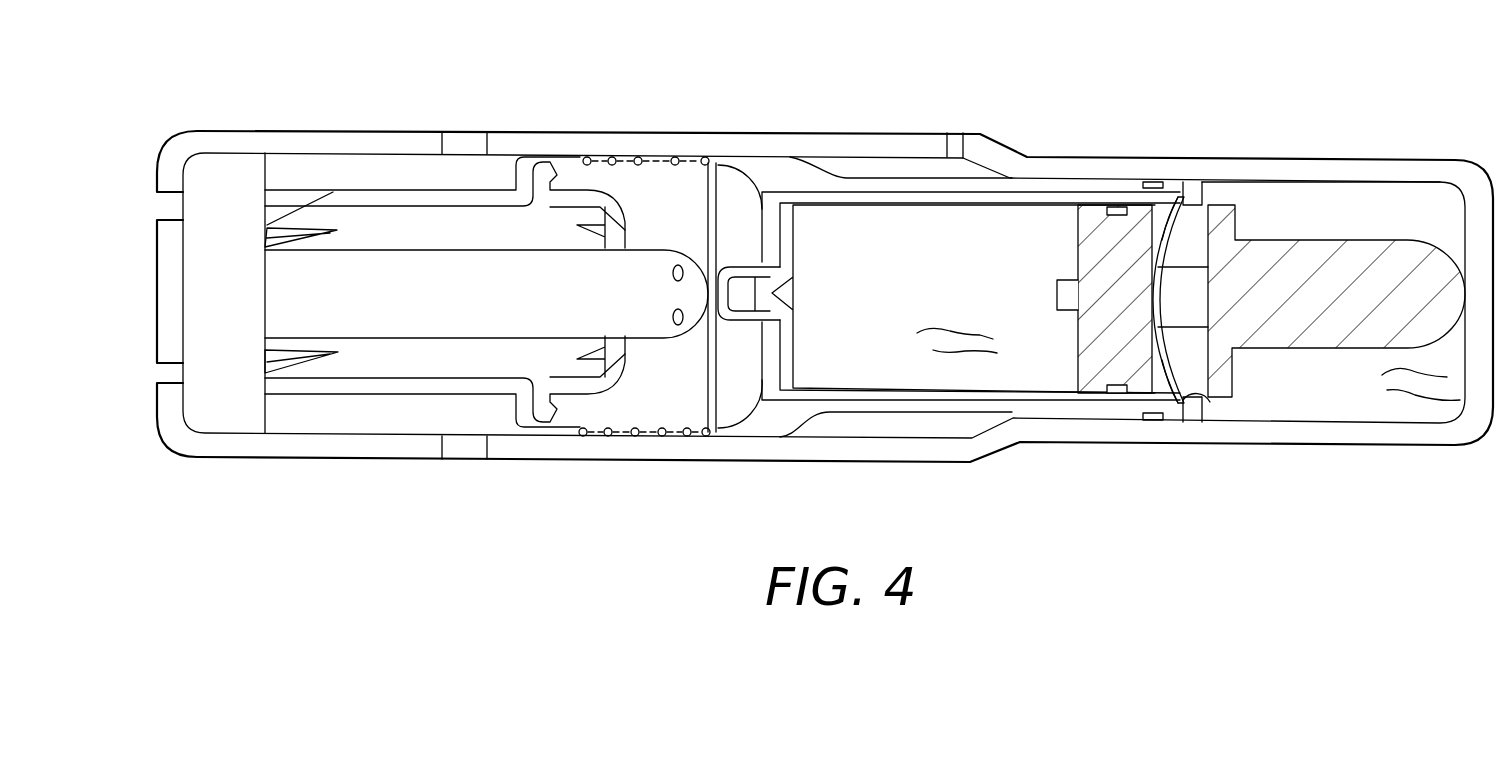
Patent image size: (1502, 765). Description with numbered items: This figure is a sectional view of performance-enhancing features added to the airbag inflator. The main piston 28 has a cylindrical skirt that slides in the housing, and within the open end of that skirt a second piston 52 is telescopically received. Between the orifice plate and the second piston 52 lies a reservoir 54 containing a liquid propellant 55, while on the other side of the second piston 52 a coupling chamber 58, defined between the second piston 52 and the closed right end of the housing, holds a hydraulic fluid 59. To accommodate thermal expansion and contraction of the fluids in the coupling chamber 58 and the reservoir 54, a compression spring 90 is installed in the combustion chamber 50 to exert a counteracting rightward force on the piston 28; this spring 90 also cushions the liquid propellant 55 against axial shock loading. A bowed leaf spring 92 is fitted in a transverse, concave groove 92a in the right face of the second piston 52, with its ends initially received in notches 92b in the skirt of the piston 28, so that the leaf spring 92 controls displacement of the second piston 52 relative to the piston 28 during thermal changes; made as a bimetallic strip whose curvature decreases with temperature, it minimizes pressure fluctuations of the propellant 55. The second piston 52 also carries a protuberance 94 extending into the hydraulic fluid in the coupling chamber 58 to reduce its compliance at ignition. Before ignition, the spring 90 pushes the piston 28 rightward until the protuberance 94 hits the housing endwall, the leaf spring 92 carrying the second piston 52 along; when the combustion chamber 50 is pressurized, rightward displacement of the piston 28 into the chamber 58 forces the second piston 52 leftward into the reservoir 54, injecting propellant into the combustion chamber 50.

The piston 28 is at (847, 182).
The combustion chamber 50 is at (681, 223).
The second piston 52 is at (1134, 308).
The reservoir 54 is at (940, 285).
The liquid propellant 55 is at (957, 355).
The coupling chamber 58 is at (1364, 225).
The hydraulic fluid 59 is at (1410, 398).
The compression spring 90 is at (655, 158).
The bowed leaf spring 92 is at (1198, 225).
The concave groove 92a is at (1203, 395).
The notches 92b is at (1167, 197).
The protuberance 94 is at (1327, 315).